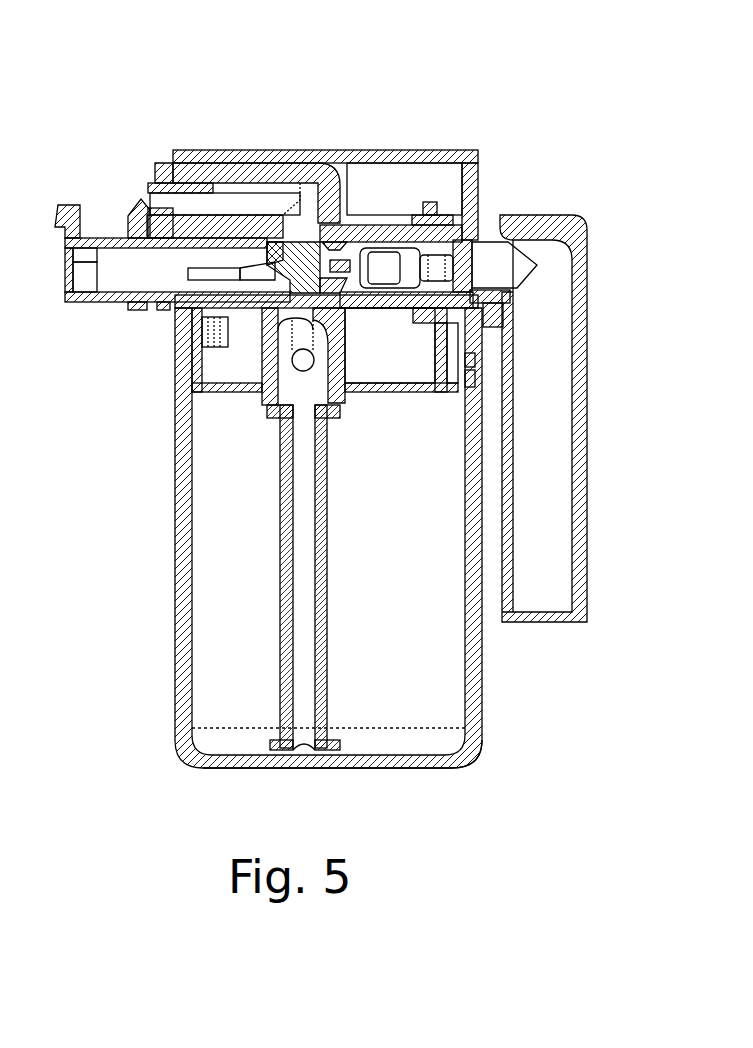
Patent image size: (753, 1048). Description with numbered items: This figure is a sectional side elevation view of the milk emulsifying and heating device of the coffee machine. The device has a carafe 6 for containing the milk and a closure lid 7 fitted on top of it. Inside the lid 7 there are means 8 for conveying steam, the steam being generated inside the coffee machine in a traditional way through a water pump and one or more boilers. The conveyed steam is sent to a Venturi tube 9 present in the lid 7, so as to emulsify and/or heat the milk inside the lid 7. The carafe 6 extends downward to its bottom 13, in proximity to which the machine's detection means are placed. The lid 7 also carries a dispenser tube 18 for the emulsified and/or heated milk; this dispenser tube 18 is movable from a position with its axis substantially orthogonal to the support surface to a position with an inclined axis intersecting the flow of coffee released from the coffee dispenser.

The carafe 6 is at (178, 675).
The closure lid 7 is at (478, 162).
The means for conveying steam 8 is at (160, 273).
The Venturi tube 9 is at (355, 250).
The bottom of the carafe 13 is at (385, 755).
The dispenser tube 18 is at (553, 568).